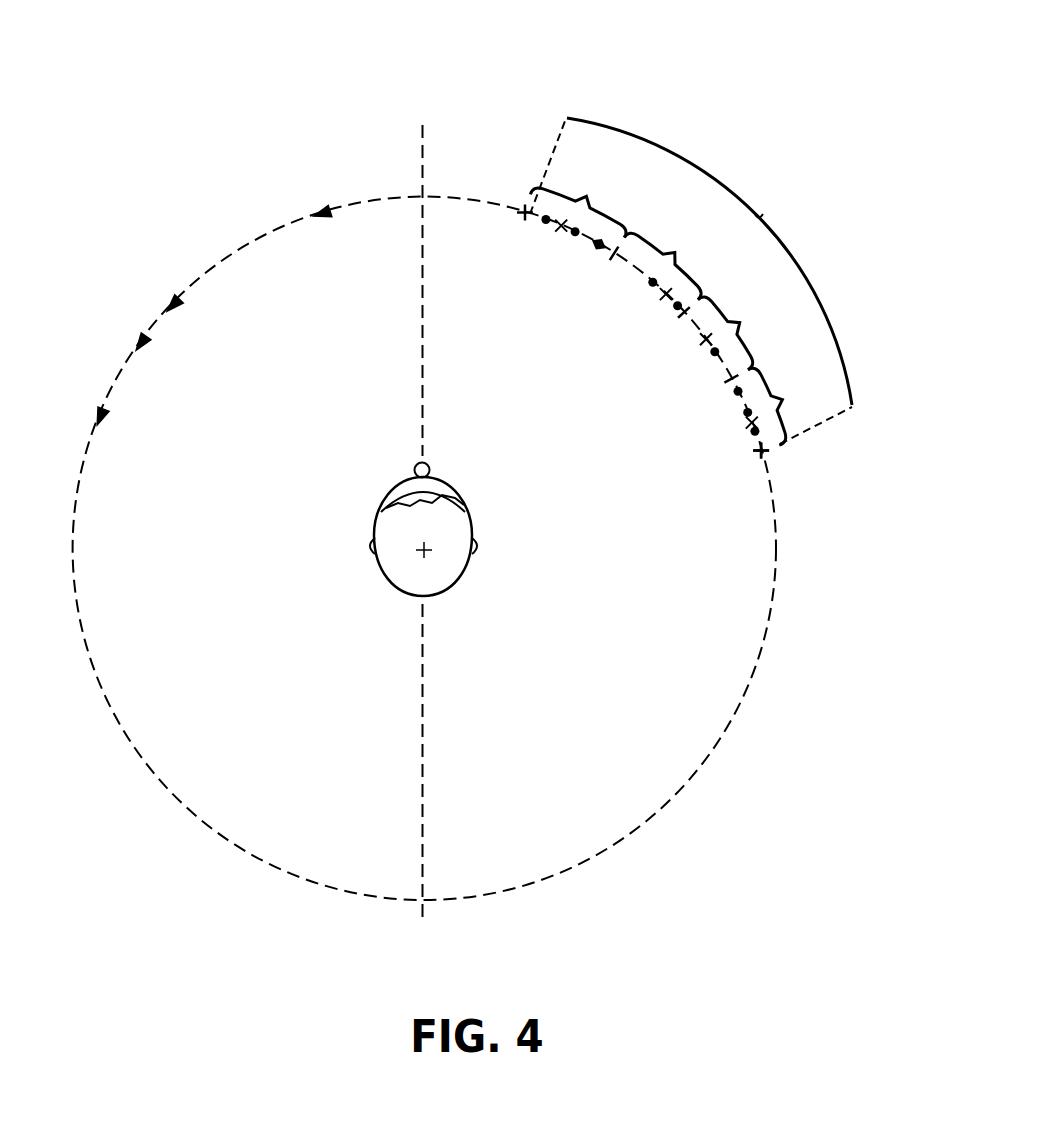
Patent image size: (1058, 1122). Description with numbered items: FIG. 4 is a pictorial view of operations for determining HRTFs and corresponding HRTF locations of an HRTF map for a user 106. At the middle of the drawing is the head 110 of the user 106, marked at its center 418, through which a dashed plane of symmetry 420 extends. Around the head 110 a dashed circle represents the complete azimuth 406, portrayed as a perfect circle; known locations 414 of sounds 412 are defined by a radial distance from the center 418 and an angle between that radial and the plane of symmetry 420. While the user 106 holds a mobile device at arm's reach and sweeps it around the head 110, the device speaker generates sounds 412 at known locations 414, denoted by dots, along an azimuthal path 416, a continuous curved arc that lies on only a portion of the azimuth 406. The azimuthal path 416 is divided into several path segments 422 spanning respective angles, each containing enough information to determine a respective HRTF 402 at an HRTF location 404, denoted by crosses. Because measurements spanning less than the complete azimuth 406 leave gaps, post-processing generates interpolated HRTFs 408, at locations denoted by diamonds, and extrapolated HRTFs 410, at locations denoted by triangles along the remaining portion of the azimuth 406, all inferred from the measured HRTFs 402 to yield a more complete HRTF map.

The user 106 is at (372, 528).
The head 110 is at (372, 509).
The HRTF 402 is at (666, 296).
The HRTF location 404 is at (739, 433).
The azimuth 406 is at (668, 805).
The interpolated HRTF 408 is at (599, 246).
The extrapolated HRTF 410 is at (136, 335).
The sound 412 is at (547, 219).
The known location 414 is at (739, 392).
The azimuthal path 416 is at (691, 281).
The center 418 is at (418, 553).
The plane of symmetry 420 is at (420, 215).
The path segment 422 is at (773, 402).